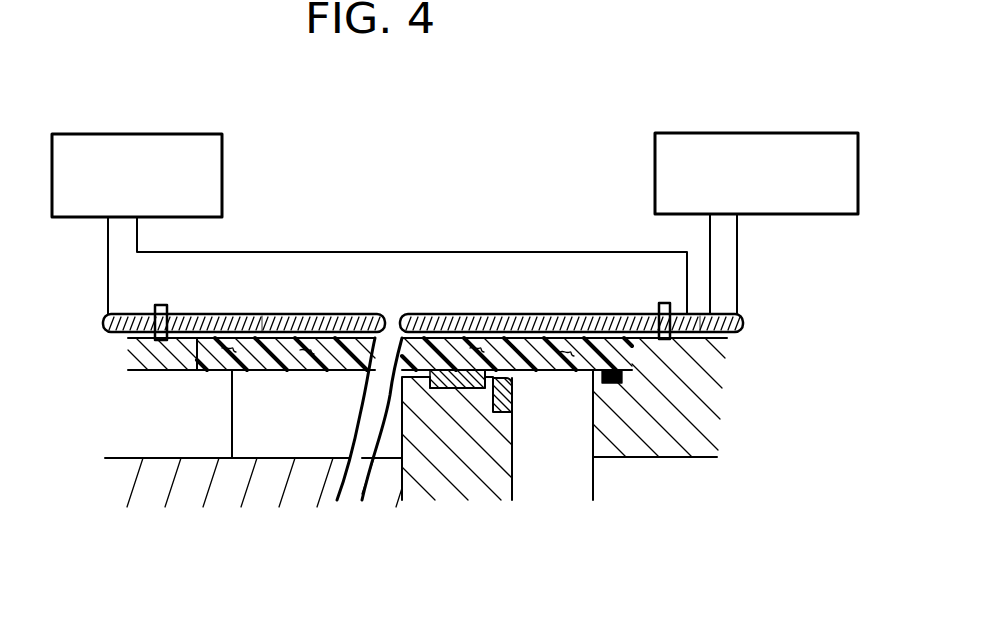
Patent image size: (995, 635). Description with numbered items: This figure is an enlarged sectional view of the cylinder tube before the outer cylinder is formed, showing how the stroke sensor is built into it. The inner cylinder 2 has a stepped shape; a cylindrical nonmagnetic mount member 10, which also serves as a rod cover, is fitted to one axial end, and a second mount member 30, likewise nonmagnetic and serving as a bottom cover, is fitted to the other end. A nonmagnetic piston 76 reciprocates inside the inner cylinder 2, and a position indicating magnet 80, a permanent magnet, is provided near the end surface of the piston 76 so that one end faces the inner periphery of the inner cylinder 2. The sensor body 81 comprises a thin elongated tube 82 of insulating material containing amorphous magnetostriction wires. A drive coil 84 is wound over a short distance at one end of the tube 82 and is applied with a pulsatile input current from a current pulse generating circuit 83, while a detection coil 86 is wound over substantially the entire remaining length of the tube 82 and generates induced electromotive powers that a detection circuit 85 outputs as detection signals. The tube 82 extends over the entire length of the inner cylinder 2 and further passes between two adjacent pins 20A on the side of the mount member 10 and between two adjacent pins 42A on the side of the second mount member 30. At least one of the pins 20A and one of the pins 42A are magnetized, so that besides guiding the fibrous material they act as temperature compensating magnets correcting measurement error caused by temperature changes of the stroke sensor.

The detection circuit 85 is at (222, 165).
The current pulse generating circuit 83 is at (655, 181).
The sensor body 81 is at (313, 314).
The detection coil 86 is at (265, 314).
The thin elongated tube 82 is at (497, 314).
The drive coil 84 is at (735, 342).
The pins 20A is at (161, 305).
The pins 42A is at (663, 303).
The mount member 10 is at (172, 355).
The inner cylinder 2 is at (298, 356).
The piston 76 is at (496, 484).
The position indicating magnet 80 is at (512, 398).
The second mount member 30 is at (690, 406).